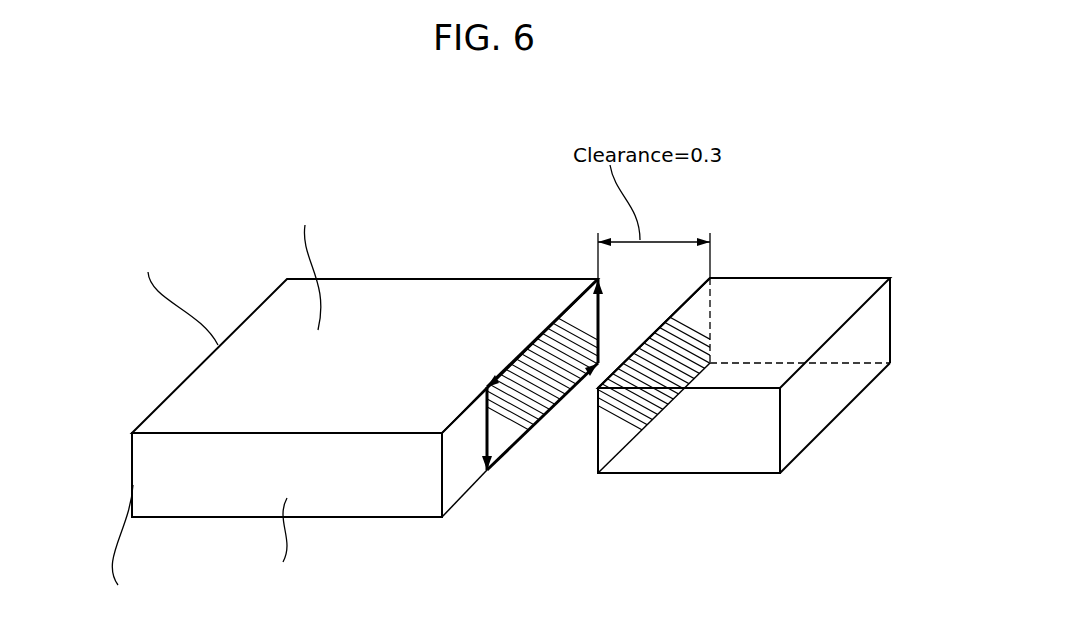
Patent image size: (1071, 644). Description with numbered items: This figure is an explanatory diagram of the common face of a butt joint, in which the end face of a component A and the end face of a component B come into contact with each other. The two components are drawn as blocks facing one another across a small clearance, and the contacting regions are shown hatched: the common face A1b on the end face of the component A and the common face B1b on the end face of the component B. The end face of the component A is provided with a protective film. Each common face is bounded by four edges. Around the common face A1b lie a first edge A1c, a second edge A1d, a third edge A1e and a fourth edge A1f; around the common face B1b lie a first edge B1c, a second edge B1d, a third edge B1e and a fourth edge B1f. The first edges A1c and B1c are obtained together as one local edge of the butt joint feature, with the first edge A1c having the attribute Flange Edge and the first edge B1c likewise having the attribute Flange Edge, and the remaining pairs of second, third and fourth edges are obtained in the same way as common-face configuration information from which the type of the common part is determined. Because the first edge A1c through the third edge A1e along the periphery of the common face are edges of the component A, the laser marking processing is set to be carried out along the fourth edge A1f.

The component A is at (428, 278).
The component B is at (808, 278).
The common face A1b is at (548, 358).
The first edge A1c is at (538, 427).
The second edge A1d is at (601, 300).
The third edge A1e is at (560, 345).
The fourth edge A1f is at (480, 412).
The common face B1b is at (680, 305).
The first edge B1c is at (648, 430).
The second edge B1d is at (718, 330).
The third edge B1e is at (625, 385).
The fourth edge B1f is at (598, 450).